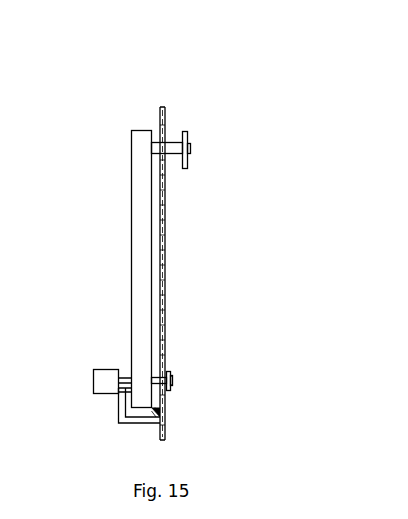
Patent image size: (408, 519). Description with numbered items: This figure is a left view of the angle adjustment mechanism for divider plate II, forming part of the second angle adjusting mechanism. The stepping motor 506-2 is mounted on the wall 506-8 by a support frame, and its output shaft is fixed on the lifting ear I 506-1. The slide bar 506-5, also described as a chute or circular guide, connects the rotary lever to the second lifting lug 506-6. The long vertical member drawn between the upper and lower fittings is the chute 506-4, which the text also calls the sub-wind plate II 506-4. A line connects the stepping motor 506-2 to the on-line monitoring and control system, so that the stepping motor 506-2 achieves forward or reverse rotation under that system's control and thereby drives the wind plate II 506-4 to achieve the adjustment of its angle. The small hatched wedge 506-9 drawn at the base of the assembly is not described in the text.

The lifting ear I 506-1 is at (173, 377).
The stepping motor 506-2 is at (104, 378).
The chute 506-4 is at (142, 194).
The chute 506-5 is at (159, 143).
The lifting lug 2 506-6 is at (189, 137).
The wind turbine 506-8 is at (121, 409).
The wedge 506-9 is at (265, 438).